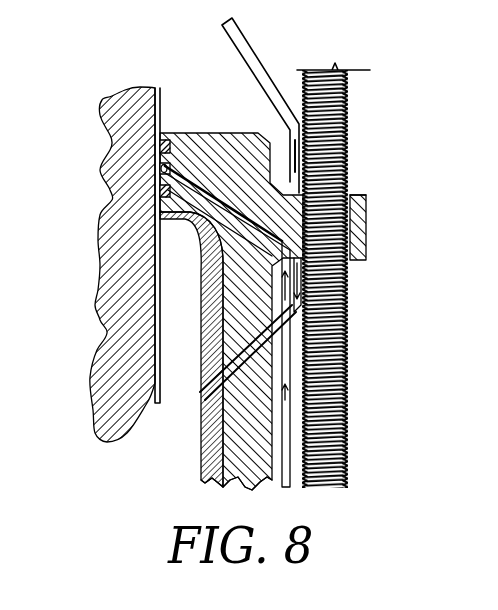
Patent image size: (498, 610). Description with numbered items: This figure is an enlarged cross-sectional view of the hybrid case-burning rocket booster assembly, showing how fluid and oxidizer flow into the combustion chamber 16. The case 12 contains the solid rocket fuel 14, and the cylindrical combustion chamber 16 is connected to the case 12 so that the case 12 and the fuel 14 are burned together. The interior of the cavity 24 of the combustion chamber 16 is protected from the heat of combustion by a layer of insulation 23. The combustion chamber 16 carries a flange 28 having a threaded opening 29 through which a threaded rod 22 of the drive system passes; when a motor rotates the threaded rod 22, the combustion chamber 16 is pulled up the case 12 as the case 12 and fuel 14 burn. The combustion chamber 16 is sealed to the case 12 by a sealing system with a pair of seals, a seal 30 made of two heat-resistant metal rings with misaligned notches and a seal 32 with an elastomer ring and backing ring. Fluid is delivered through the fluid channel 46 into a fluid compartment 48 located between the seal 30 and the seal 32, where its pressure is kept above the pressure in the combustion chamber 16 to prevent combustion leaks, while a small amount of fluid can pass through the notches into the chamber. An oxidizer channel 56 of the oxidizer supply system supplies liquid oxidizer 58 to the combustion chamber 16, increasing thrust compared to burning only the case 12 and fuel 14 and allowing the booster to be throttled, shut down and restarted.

The case 12 is at (161, 380).
The solid rocket fuel 14 is at (107, 340).
The combustion chamber 16 is at (205, 132).
The threaded rod 22 is at (350, 358).
The layer of insulation 23 is at (198, 473).
The cavity 24 is at (193, 298).
The flange 28 is at (367, 217).
The threaded opening 29 is at (352, 194).
The seal 30 is at (158, 194).
The seal 32 is at (160, 145).
The fluid channel 46 is at (292, 482).
The fluid compartment 48 is at (158, 168).
The oxidizer channel 56 is at (245, 43).
The liquid oxidizer 58 is at (298, 148).